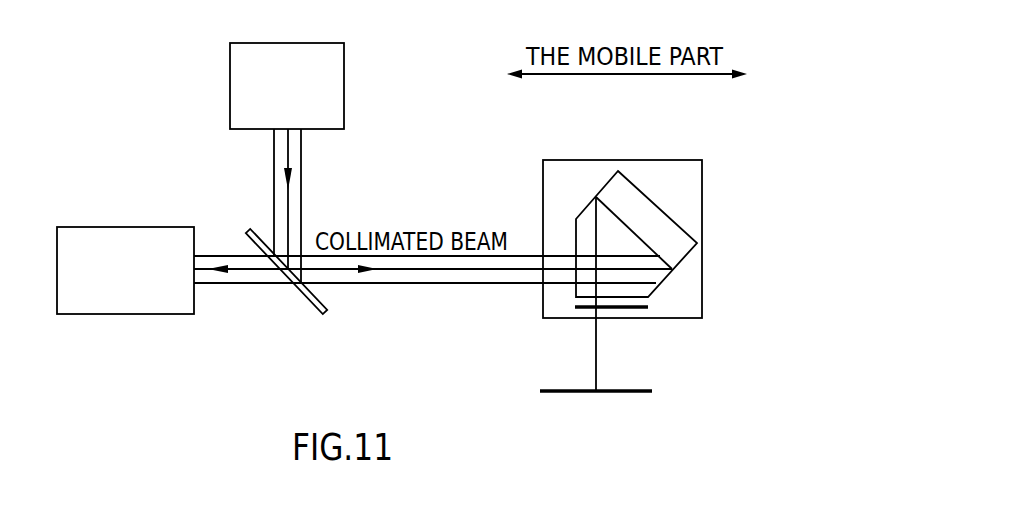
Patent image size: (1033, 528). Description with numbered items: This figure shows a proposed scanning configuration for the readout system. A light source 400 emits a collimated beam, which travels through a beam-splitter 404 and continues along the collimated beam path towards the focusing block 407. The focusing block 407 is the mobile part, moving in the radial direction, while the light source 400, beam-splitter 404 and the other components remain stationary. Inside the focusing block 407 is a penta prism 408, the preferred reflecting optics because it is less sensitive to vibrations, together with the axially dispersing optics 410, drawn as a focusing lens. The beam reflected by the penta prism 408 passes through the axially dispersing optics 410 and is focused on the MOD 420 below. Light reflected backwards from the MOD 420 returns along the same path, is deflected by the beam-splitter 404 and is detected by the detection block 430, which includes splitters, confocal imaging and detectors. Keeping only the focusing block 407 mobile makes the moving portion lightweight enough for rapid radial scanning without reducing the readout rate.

The light source 400 is at (229, 100).
The detection block 430 is at (118, 226).
The beam-splitter 404 is at (300, 296).
The focusing block 407 is at (652, 159).
The penta prism 408 is at (665, 212).
The axially dispersing optics 410 is at (632, 308).
The MOD 420 is at (583, 397).